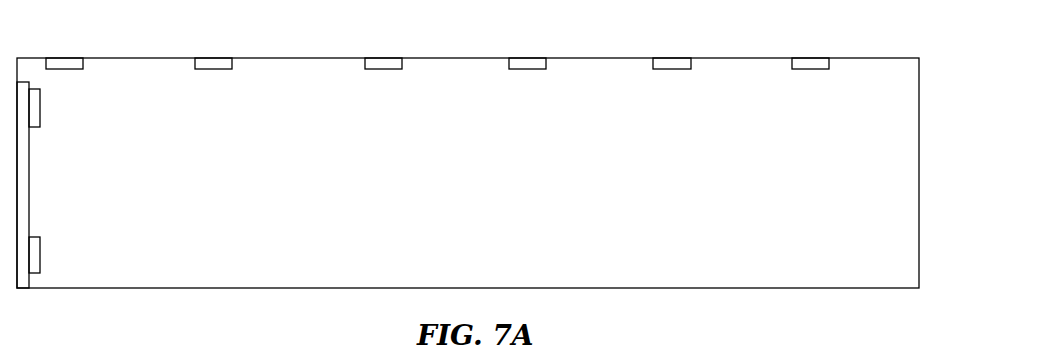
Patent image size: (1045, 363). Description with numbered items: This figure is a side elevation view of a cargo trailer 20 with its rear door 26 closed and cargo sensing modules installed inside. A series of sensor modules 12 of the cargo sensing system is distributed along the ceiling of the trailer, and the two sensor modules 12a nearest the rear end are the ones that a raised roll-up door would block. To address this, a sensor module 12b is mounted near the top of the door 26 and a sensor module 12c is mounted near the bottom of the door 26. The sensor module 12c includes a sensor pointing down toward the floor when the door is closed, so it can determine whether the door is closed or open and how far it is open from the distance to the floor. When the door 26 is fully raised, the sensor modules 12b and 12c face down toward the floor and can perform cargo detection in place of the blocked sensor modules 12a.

The housing / substrate panel 20 is at (884, 57).
The door 26 is at (29, 185).
The sensor module 12 is at (383, 57).
The sensor module 12a is at (63, 57).
The sensor module 12b is at (41, 110).
The sensor module 12c is at (41, 252).